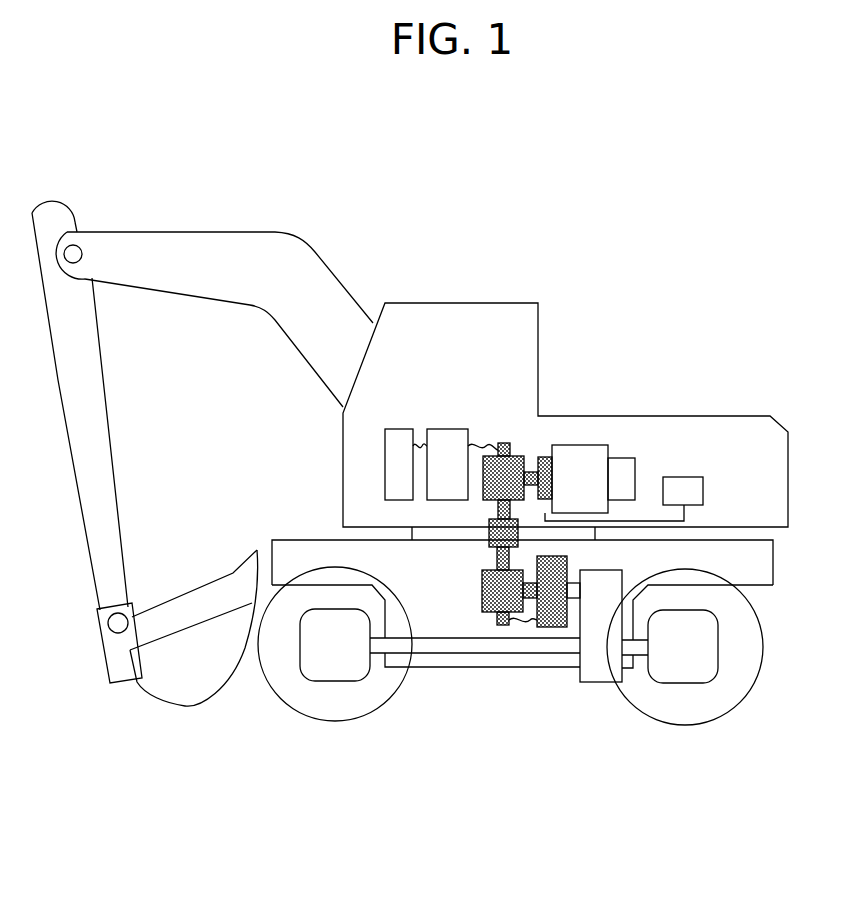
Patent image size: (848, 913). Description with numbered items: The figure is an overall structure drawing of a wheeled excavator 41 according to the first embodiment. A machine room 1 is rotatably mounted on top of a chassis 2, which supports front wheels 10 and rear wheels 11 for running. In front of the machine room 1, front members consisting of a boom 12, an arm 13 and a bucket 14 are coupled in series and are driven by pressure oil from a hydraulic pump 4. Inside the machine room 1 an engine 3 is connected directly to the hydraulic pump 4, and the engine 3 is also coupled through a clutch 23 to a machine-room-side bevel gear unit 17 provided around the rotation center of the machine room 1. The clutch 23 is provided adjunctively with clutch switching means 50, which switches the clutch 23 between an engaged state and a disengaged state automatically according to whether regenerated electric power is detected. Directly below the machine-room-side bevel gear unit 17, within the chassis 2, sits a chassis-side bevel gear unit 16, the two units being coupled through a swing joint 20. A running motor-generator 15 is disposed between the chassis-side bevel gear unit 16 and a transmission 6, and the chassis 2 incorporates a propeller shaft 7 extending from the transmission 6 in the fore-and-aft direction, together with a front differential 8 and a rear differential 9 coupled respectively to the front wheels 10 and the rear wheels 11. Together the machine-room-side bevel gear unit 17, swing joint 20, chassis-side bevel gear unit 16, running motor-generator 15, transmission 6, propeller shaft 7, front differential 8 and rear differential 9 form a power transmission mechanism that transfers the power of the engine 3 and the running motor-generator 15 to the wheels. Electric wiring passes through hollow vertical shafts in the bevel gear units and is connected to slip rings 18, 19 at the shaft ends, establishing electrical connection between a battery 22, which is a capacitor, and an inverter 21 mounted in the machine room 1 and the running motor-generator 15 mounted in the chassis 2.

The machine room 1 is at (693, 432).
The chassis 2 is at (758, 577).
The engine 3 is at (578, 453).
The hydraulic pump 4 is at (625, 465).
The transmission 6 is at (595, 673).
The propeller shaft 7 is at (500, 647).
The front differential 8 is at (318, 670).
The rear differential 9 is at (693, 673).
The front wheels 10 is at (337, 722).
The rear wheels 11 is at (697, 722).
The boom 12 is at (253, 243).
The arm 13 is at (60, 213).
The bucket 14 is at (165, 695).
The running motor-generator 15 is at (552, 625).
The chassis-side bevel gear unit 16 is at (488, 605).
The machine-room-side bevel gear unit 17 is at (520, 462).
The slip ring 18 is at (503, 625).
The slip ring 19 is at (497, 437).
The swing joint 20 is at (495, 535).
The inverter 21 is at (440, 437).
The battery 22 is at (393, 437).
The clutch 23 is at (547, 462).
The wheeled excavator 41 is at (656, 152).
The clutch switching means 50 is at (700, 478).